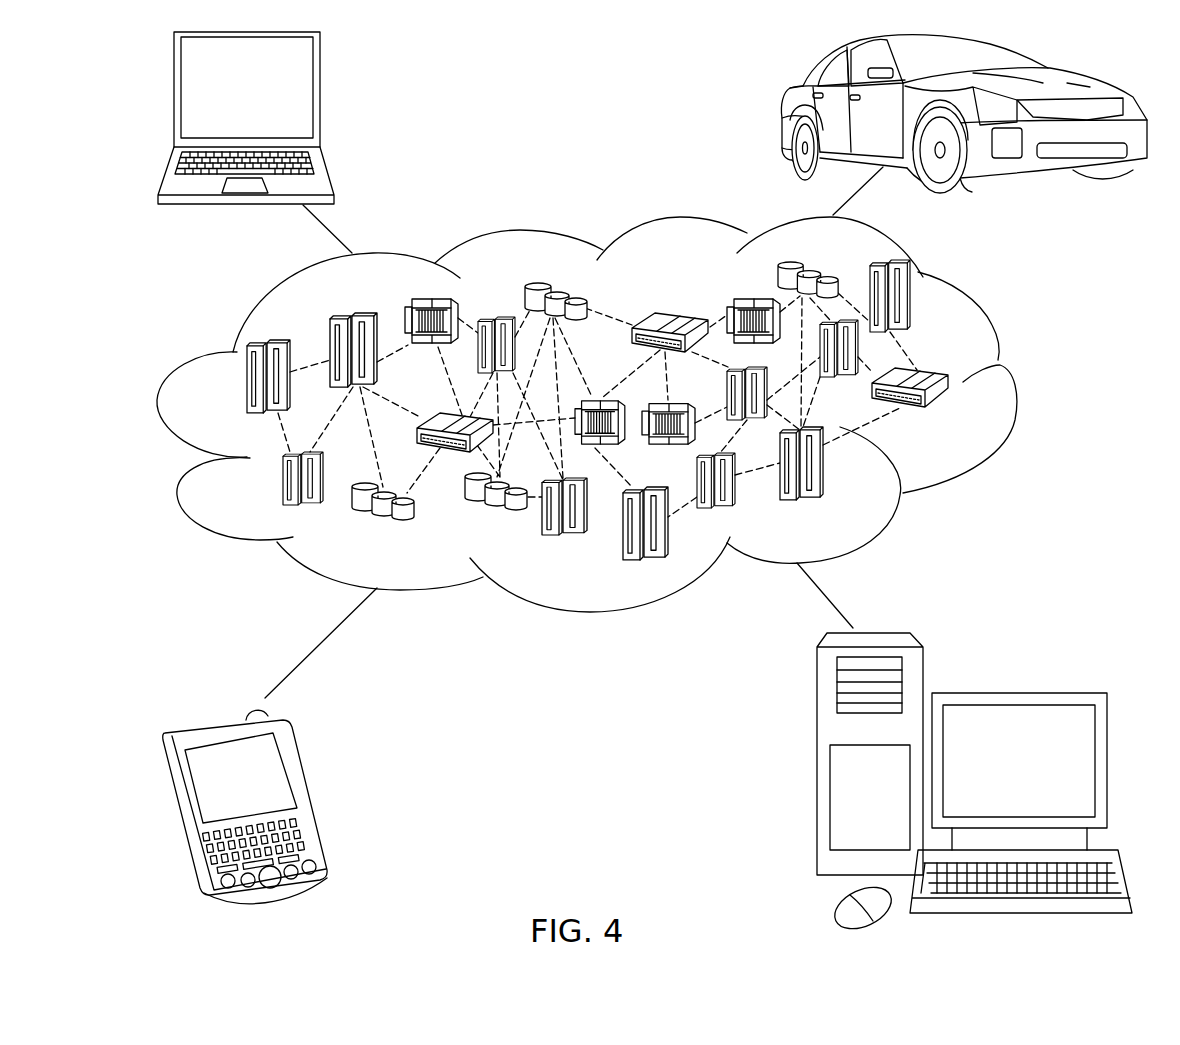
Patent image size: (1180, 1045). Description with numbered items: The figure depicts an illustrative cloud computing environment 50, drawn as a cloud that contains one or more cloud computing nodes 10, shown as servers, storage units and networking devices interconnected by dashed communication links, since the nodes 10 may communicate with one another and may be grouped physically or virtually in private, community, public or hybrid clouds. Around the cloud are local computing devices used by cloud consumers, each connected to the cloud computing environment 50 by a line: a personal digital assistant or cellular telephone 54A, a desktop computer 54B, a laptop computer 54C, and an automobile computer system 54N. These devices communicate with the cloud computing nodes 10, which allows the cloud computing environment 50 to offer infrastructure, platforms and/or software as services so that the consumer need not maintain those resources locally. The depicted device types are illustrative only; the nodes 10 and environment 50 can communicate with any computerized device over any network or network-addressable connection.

The laptop computer 54C is at (320, 97).
The automobile computer system 54N is at (782, 112).
The cloud computing environment 50 is at (1015, 386).
The cloud computing nodes 10 is at (953, 417).
The personal digital assistant (PDA) or cellular telephone 54A is at (309, 792).
The desktop computer 54B is at (1015, 693).